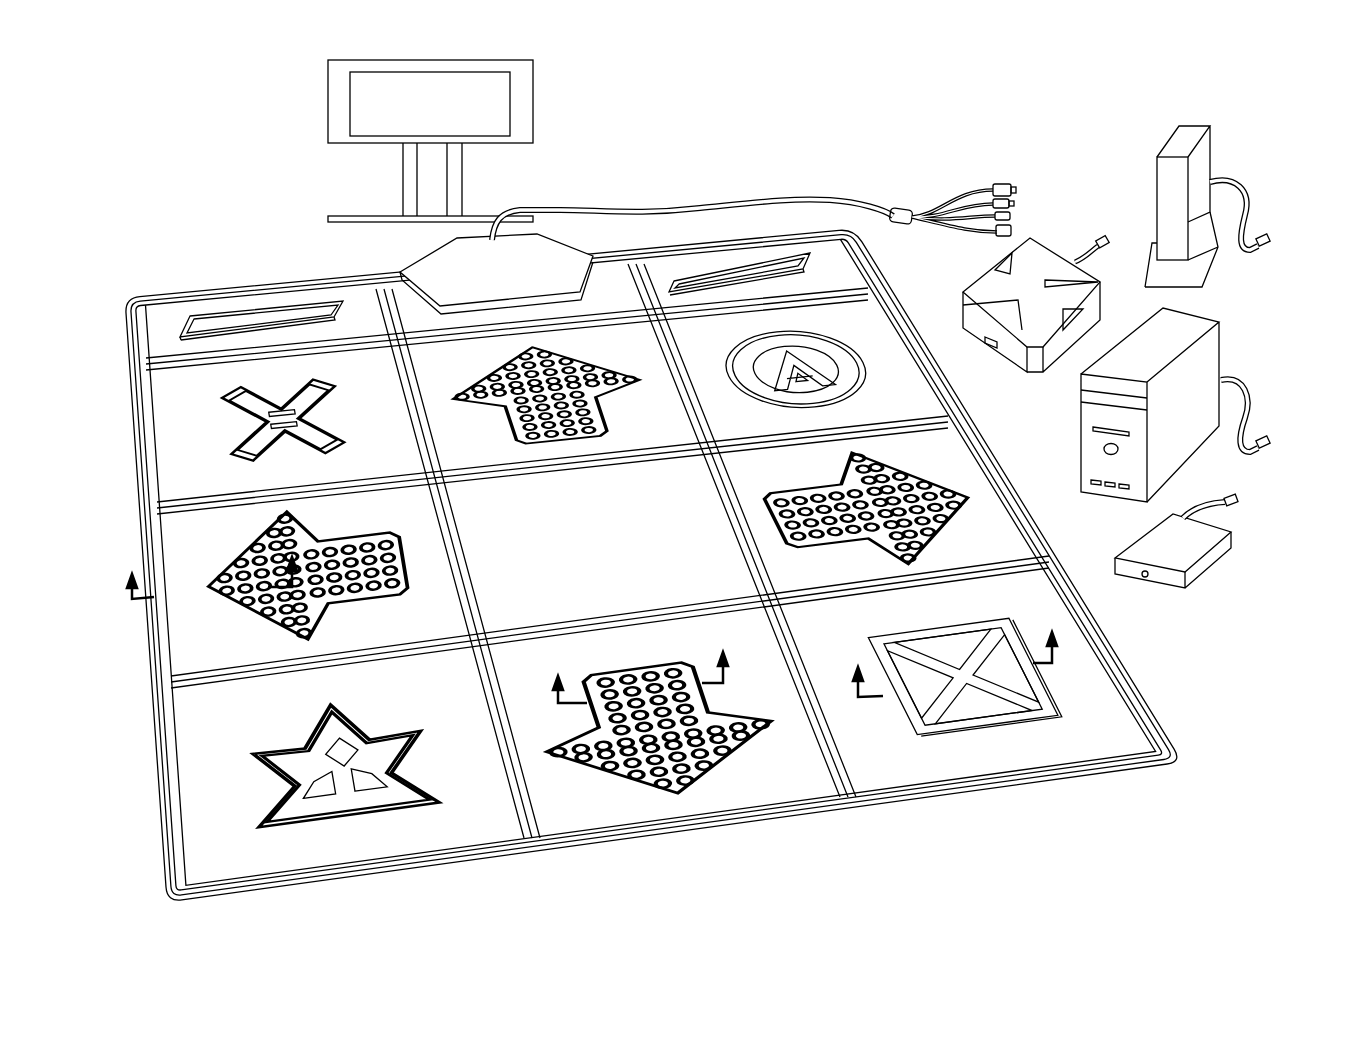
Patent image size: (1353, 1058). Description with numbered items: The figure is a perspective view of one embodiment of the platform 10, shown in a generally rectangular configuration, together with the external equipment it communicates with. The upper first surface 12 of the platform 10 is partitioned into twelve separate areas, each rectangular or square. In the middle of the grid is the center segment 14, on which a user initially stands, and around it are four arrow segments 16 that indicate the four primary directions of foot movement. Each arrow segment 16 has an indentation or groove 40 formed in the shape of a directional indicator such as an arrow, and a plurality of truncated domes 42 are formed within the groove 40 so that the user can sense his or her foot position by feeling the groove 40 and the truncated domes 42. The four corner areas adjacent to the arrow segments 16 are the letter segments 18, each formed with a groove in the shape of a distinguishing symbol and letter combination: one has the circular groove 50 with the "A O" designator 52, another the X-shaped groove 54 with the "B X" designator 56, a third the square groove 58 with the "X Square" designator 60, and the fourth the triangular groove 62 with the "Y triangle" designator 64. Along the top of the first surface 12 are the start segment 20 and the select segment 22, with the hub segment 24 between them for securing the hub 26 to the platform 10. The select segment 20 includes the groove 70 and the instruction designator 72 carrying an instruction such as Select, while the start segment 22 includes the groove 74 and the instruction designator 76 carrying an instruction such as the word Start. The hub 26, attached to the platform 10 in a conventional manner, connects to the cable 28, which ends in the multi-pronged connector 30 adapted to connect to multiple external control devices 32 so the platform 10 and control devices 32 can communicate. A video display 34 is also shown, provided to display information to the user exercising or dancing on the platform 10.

The platform 10 is at (217, 168).
The first surface 12 is at (150, 456).
The center segment 14 is at (608, 555).
The arrow segments 16 is at (461, 368).
The letter segments 18 is at (197, 401).
The start segment 20 is at (203, 300).
The select segment 22 is at (845, 268).
The hub segment 24 is at (408, 305).
The hub 26 is at (509, 278).
The cable 28 is at (748, 200).
The multi-pronged connector 30 is at (968, 190).
The external control devices 32 is at (1270, 600).
The video display 34 is at (328, 104).
The groove 40 is at (603, 418).
The truncated domes 42 is at (520, 411).
The circular groove 50 is at (841, 387).
The "A O" designator 52 is at (792, 350).
The X-shaped groove 54 is at (333, 436).
The "B X" designator 56 is at (323, 388).
The square groove 58 is at (1055, 712).
The "X Square" designator 60 is at (1022, 677).
The triangular groove 62 is at (281, 792).
The "Y triangle" designator 64 is at (400, 788).
The groove 70 is at (185, 322).
The instruction designator 72 is at (262, 316).
The groove 74 is at (678, 284).
The instruction designator 76 is at (783, 270).